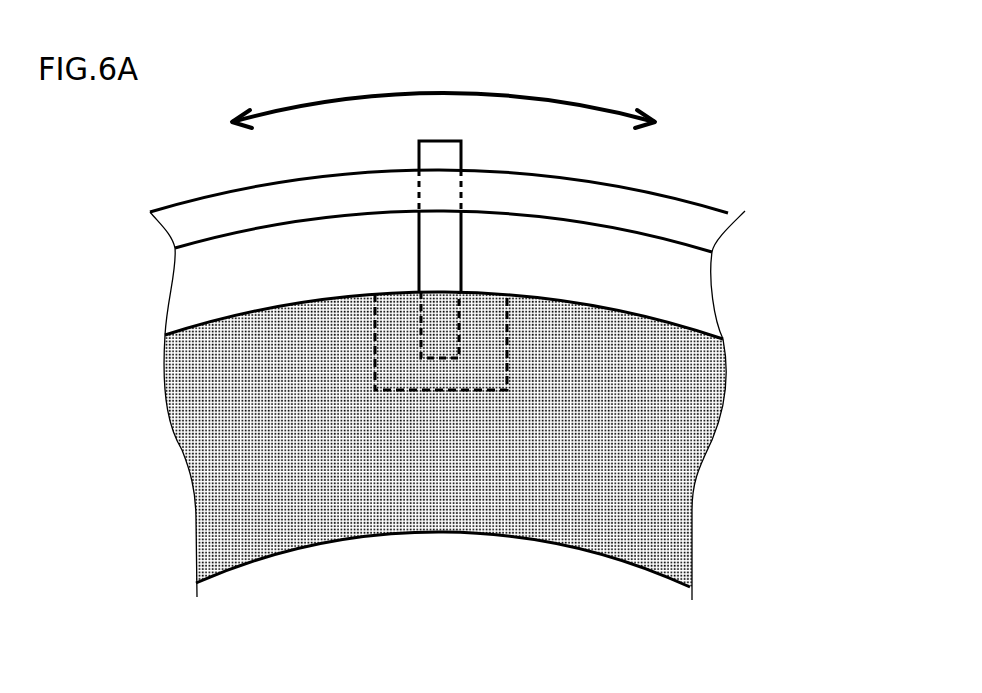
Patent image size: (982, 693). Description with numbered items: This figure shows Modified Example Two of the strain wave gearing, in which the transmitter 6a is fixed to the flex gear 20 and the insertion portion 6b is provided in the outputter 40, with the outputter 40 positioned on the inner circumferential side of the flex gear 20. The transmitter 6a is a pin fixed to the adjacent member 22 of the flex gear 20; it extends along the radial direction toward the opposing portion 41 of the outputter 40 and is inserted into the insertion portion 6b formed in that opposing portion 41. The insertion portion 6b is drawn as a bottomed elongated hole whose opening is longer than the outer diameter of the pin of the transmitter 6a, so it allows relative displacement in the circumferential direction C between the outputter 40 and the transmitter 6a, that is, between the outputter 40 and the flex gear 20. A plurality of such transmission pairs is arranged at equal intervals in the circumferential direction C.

The circumferential direction C is at (470, 93).
The transmitter 6a is at (461, 242).
The insertion portion 6b is at (395, 289).
The flex gear 20 is at (667, 221).
The adjacent member 22 is at (608, 183).
The outputter 40 is at (668, 413).
The opposing portion 41 is at (583, 296).